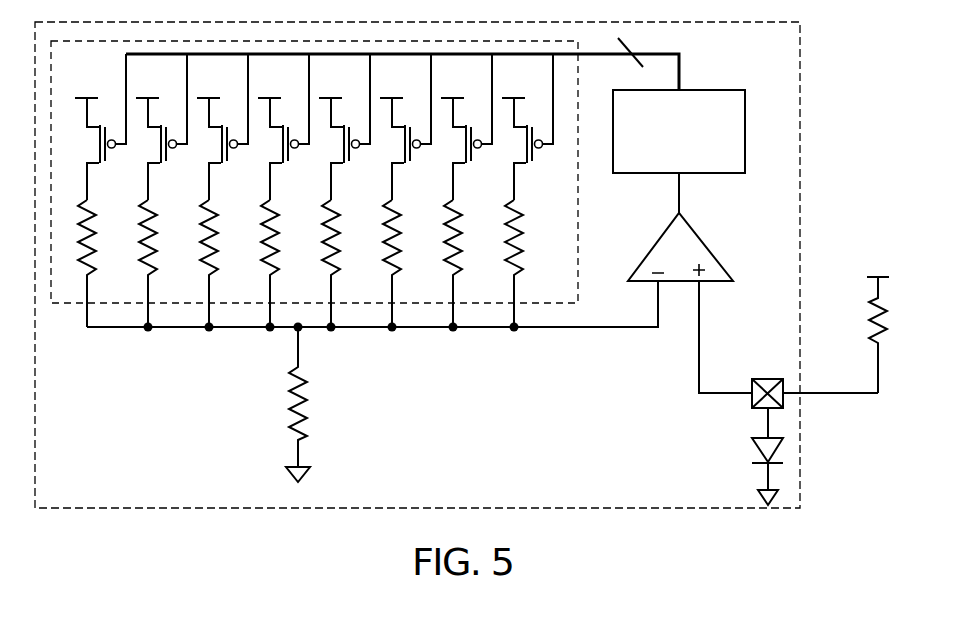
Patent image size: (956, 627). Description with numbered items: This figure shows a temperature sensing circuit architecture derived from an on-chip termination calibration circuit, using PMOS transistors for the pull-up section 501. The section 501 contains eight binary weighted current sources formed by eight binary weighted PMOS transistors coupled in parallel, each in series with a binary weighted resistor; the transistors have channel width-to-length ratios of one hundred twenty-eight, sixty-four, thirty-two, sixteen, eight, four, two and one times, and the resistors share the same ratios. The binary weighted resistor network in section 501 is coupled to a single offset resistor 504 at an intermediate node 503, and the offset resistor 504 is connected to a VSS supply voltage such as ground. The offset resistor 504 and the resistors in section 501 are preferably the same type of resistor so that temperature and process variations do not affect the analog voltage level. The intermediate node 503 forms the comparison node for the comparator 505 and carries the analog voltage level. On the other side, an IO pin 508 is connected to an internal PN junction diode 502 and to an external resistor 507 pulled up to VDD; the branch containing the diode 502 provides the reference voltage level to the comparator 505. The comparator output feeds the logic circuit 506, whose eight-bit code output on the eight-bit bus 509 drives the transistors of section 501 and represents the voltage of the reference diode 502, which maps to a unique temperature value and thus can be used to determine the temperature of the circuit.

The pull-up section 501 is at (579, 183).
The internal PN junction diode 502 is at (767, 440).
The intermediate node 503 is at (302, 330).
The offset resistor 504 is at (303, 422).
The comparator 505 is at (706, 245).
The logic circuit 506 is at (745, 130).
The external resistor 507 is at (857, 308).
The IO pin 508 is at (768, 378).
The 8-bit bus 509 is at (680, 73).